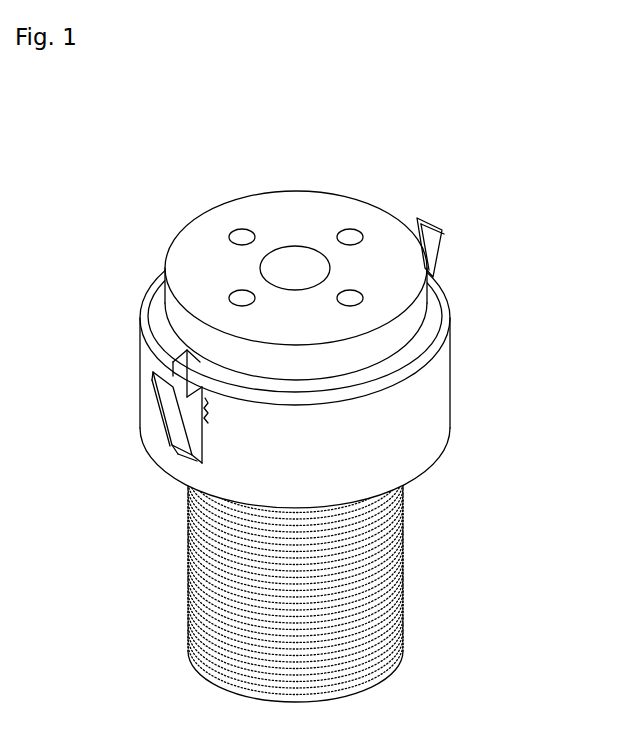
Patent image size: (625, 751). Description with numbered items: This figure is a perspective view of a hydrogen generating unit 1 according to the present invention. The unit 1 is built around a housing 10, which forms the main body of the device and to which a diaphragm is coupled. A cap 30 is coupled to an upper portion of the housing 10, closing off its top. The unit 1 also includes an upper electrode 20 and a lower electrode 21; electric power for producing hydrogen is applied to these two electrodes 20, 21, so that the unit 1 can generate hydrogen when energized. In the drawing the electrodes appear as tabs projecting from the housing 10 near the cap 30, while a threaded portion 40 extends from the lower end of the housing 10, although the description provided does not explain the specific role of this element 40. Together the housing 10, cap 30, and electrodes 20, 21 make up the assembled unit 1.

The hydrogen generating unit 1 is at (316, 389).
The housing 10 is at (455, 392).
The upper electrode 20 is at (172, 405).
The lower electrode 21 is at (438, 227).
The cap 30 is at (277, 205).
The threaded portion 40 is at (373, 580).